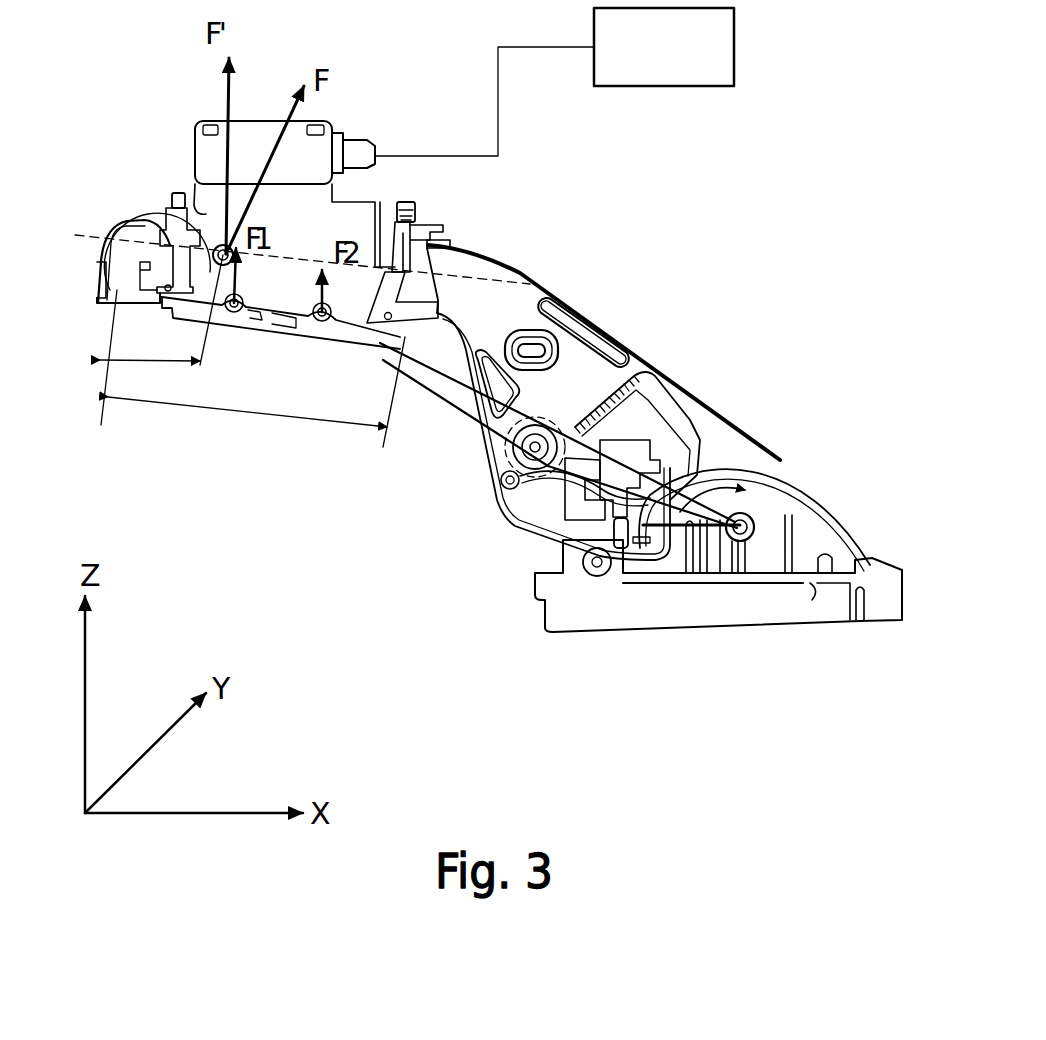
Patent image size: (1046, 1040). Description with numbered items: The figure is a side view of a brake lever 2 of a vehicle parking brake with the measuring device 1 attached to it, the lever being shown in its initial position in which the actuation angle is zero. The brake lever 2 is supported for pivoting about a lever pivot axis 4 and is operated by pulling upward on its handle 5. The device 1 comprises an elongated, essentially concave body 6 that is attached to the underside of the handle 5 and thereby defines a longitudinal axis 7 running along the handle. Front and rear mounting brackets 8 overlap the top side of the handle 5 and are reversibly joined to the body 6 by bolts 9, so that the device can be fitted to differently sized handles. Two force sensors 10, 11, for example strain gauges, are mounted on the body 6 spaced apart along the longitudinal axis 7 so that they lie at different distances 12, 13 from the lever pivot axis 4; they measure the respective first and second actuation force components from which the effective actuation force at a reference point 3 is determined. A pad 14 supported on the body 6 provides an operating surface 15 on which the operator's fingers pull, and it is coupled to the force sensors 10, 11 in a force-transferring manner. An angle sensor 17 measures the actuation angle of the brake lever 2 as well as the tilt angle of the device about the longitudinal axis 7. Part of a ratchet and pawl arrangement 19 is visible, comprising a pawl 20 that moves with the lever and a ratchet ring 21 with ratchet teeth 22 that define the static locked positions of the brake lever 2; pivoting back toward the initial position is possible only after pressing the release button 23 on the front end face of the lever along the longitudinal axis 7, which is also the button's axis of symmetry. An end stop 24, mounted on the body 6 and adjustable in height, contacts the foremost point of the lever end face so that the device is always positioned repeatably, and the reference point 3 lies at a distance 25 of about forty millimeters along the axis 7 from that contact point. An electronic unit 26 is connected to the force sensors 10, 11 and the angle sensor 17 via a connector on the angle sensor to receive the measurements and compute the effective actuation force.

The device 1 is at (158, 122).
The brake lever 2 is at (578, 382).
The reference point 3 is at (170, 232).
The lever pivot axis 4 is at (755, 523).
The handle 5 is at (256, 392).
The body 6 is at (205, 312).
The longitudinal axis 7 is at (496, 272).
The mounting brackets 8 is at (165, 215).
The bolts 9 is at (176, 194).
The first force sensor 10 is at (230, 315).
The second force sensor 11 is at (312, 334).
The distance 12 is at (346, 340).
The distance 13 is at (398, 352).
The pad 14 is at (165, 308).
The operating surface 15 is at (262, 322).
The angle sensor 17 is at (262, 148).
The ratchet and pawl arrangement 19 is at (520, 548).
The pawl 20 is at (510, 497).
The ratchet ring 21 is at (655, 398).
The ratchet teeth 22 is at (640, 378).
The release button 23 is at (118, 245).
The end stop 24 is at (106, 300).
The distance 25 is at (161, 340).
The electronic unit 26 is at (679, 62).